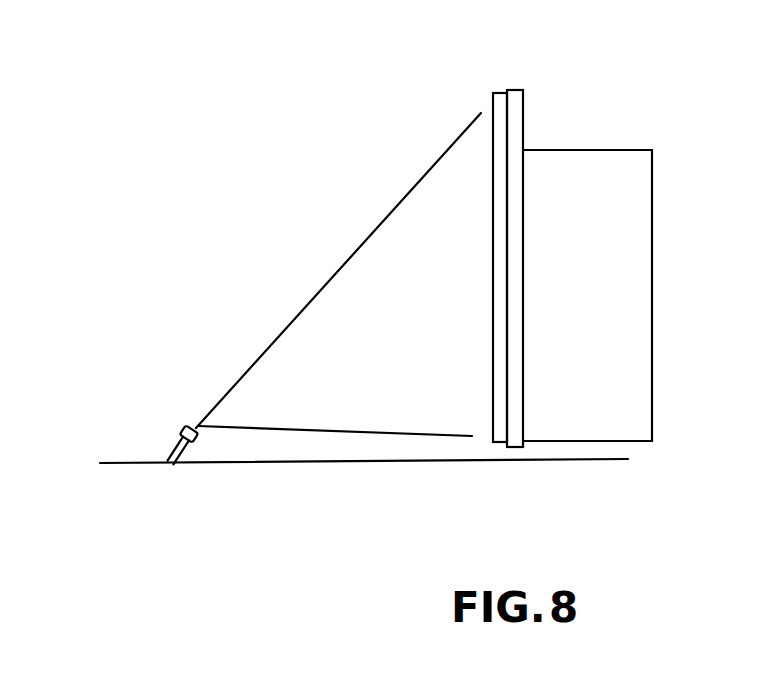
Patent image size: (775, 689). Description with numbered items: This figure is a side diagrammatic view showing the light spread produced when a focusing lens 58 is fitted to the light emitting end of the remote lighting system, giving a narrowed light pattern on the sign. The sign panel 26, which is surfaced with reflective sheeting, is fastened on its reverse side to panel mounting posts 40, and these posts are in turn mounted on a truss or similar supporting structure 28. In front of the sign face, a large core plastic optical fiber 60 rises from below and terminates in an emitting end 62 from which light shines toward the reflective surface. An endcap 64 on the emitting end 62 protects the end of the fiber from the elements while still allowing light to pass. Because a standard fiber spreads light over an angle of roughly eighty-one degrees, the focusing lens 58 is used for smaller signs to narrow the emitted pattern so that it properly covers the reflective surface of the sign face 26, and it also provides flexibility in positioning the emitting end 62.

The sign panel 26 is at (500, 98).
The panel mounting posts 40 is at (515, 126).
The supporting structure 28 is at (593, 289).
The emitting end 62 is at (260, 310).
The focusing lens 58 is at (323, 310).
The endcap 64 is at (185, 423).
The large core plastic optical fiber 60 is at (175, 443).